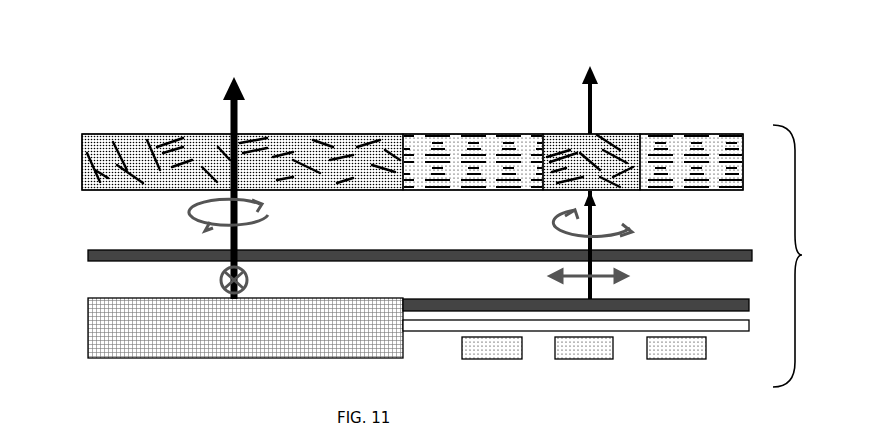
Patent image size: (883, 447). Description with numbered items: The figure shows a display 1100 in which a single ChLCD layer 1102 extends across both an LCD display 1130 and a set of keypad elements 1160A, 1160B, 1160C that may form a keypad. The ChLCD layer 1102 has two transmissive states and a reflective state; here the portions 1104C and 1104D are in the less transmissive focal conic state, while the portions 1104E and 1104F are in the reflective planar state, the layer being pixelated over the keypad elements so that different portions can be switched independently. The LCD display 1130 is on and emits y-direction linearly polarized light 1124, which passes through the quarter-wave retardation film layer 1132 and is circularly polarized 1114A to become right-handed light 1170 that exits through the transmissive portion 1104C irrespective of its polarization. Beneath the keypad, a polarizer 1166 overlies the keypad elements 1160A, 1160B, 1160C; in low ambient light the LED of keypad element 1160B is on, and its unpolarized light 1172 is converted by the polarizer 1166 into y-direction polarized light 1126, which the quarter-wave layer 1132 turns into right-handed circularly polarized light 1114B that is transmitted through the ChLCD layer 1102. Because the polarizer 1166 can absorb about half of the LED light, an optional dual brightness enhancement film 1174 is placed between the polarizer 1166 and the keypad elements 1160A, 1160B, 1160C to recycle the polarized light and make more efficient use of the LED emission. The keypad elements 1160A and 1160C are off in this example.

The display 1100 is at (815, 256).
The ChLCD layer 1102 is at (390, 111).
The transmissive portion of ChLCD layer 1104C is at (362, 130).
The transmissive portion of ChLCD layer 1104D is at (570, 132).
The reflective portion of ChLCD layer 1104E is at (470, 132).
The reflective portion of ChLCD layer 1104F is at (718, 128).
The circular polarization 1114A is at (190, 222).
The circular polarization 1114B is at (552, 222).
The y-direction linearly polarized light 1124 is at (212, 277).
The y-direction polarized light 1126 is at (548, 276).
The LCD display 1130 is at (78, 300).
The λ/4 retardation film layer 1132 is at (88, 247).
The keypad element 1160A is at (487, 363).
The keypad element 1160B is at (582, 363).
The keypad element 1160C is at (673, 363).
The polarizer 1166 is at (676, 295).
The light 1170 is at (226, 80).
The light 1172 is at (582, 73).
The dual brightness enhancement film 1174 is at (728, 332).